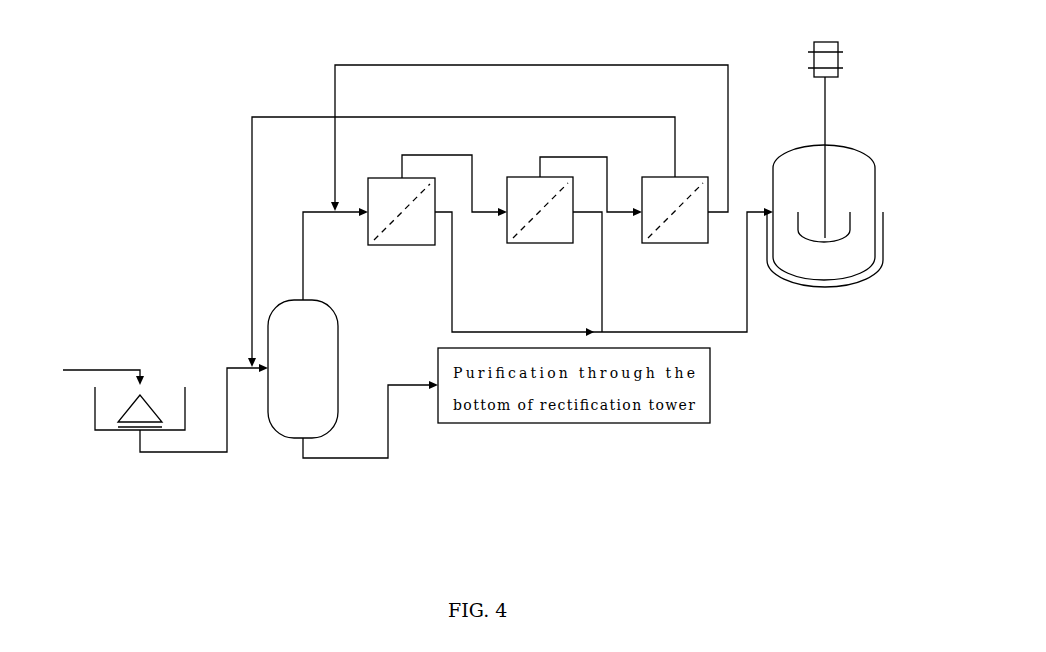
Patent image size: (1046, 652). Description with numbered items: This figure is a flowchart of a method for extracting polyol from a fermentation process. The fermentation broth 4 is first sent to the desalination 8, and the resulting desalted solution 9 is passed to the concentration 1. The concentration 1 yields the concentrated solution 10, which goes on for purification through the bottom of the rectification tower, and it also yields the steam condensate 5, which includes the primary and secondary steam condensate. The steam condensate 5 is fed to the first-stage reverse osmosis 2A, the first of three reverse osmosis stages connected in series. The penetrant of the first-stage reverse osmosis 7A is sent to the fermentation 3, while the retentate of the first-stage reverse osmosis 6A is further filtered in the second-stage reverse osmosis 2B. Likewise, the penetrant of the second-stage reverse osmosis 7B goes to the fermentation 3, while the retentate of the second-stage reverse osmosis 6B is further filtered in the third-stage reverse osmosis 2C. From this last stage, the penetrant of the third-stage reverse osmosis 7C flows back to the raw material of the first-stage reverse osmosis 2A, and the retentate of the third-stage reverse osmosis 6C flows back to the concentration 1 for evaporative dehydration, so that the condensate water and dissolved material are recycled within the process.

The concentration 1 is at (268, 422).
The first-stage reverse osmosis 2A is at (397, 245).
The second-stage reverse osmosis 2B is at (523, 243).
The third-stage reverse osmosis 2C is at (660, 243).
The fermentation 3 is at (863, 278).
The fermentation broth 4 is at (103, 360).
The steam condensate 5 is at (329, 254).
The retentate of the first-stage reverse osmosis 6A is at (454, 176).
The retentate of the second-stage reverse osmosis 6B is at (591, 176).
The retentate of the third-stage reverse osmosis 6C is at (461, 242).
The penetrant of the first-stage reverse osmosis 7A is at (604, 272).
The penetrant of the second-stage reverse osmosis 7B is at (598, 272).
The penetrant of the third-stage reverse osmosis 7C is at (542, 138).
The desalination 8 is at (95, 408).
The desalted solution 9 is at (204, 428).
The concentrated solution 10 is at (370, 431).